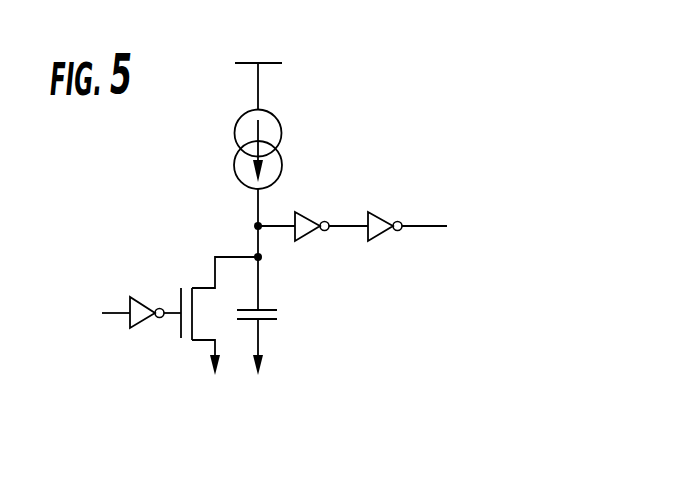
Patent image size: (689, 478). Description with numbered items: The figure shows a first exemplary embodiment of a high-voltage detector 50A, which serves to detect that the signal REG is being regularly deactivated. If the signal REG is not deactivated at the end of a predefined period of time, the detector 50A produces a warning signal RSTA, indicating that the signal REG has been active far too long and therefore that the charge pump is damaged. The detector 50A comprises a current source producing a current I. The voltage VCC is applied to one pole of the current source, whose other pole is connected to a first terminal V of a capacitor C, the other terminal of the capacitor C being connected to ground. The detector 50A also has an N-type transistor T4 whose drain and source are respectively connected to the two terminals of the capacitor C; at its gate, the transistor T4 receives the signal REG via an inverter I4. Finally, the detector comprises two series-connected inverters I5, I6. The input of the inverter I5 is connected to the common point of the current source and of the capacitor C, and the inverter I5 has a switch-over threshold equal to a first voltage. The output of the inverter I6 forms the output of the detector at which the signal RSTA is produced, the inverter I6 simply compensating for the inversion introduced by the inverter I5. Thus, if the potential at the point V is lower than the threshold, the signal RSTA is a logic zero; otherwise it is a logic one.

The detector 50A is at (443, 104).
The voltage VCC is at (258, 67).
The current I is at (249, 168).
The first terminal V is at (261, 232).
The inverter I4 is at (145, 295).
The inverter I5 is at (305, 213).
The inverter I6 is at (380, 213).
The warning signal RSTA is at (478, 227).
The signal REG is at (88, 314).
The N-type transistor T4 is at (185, 343).
The capacitor C is at (267, 314).